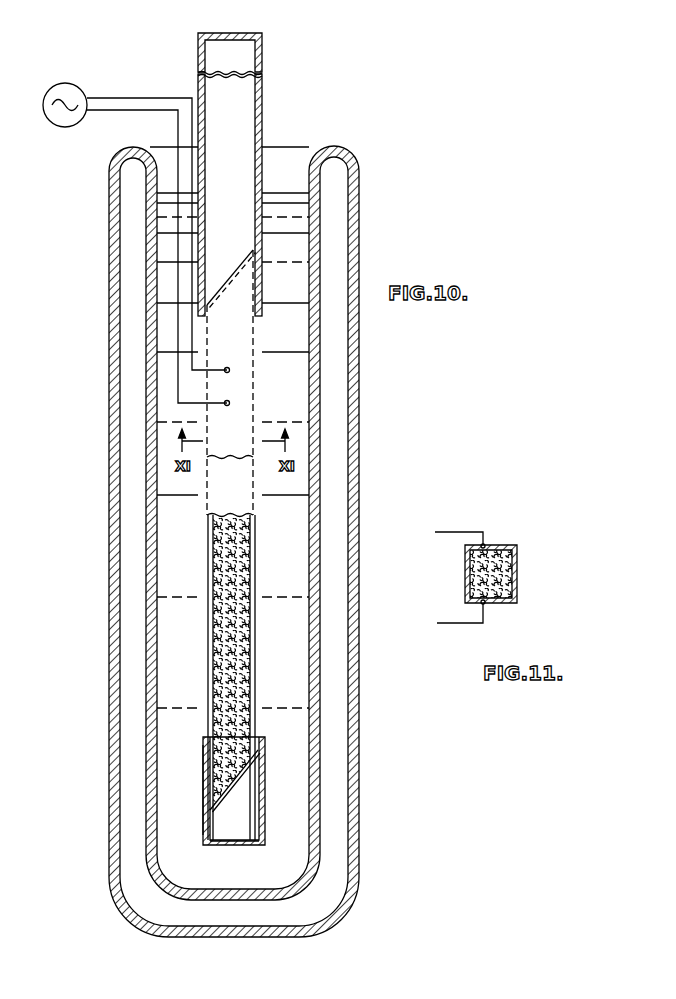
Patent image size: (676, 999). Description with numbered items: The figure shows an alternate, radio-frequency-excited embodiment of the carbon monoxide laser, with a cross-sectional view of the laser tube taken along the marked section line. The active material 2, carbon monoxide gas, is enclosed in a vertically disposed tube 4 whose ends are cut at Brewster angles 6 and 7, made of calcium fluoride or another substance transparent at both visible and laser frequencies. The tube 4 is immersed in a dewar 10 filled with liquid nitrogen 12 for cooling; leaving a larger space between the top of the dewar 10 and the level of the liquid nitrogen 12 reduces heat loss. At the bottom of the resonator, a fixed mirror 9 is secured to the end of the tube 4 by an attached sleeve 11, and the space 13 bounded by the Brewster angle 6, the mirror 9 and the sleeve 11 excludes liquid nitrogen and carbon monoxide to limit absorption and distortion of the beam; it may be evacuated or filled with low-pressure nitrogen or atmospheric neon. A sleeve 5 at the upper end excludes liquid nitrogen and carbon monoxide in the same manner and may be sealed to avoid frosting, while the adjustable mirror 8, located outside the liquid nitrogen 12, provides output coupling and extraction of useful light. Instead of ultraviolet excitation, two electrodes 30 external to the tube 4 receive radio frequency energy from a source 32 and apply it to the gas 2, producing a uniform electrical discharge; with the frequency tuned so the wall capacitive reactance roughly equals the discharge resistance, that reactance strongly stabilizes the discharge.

In FIG. 10, the active material 2 is at (222, 570).
In FIG. 11, the active material 2 is at (517, 586).
In FIG. 10, the tube 4 is at (215, 510).
In FIG. 11, the tube 4 is at (517, 560).
In FIG. 10, the sleeve 5 is at (262, 103).
In FIG. 10, the Brewster angle 6 is at (226, 789).
In FIG. 10, the Brewster angle 7 is at (233, 270).
In FIG. 10, the adjustable mirror 8 is at (235, 34).
In FIG. 10, the fixed mirror 9 is at (257, 848).
In FIG. 10, the dewar 10 is at (110, 524).
In FIG. 10, the sleeve 11 is at (203, 787).
In FIG. 10, the liquid nitrogen 12 is at (289, 192).
In FIG. 10, the space 13 is at (220, 832).
In FIG. 10, the electrodes 30 is at (249, 384).
In FIG. 11, the electrodes 30 is at (500, 605).
In FIG. 10, the source 32 is at (78, 125).